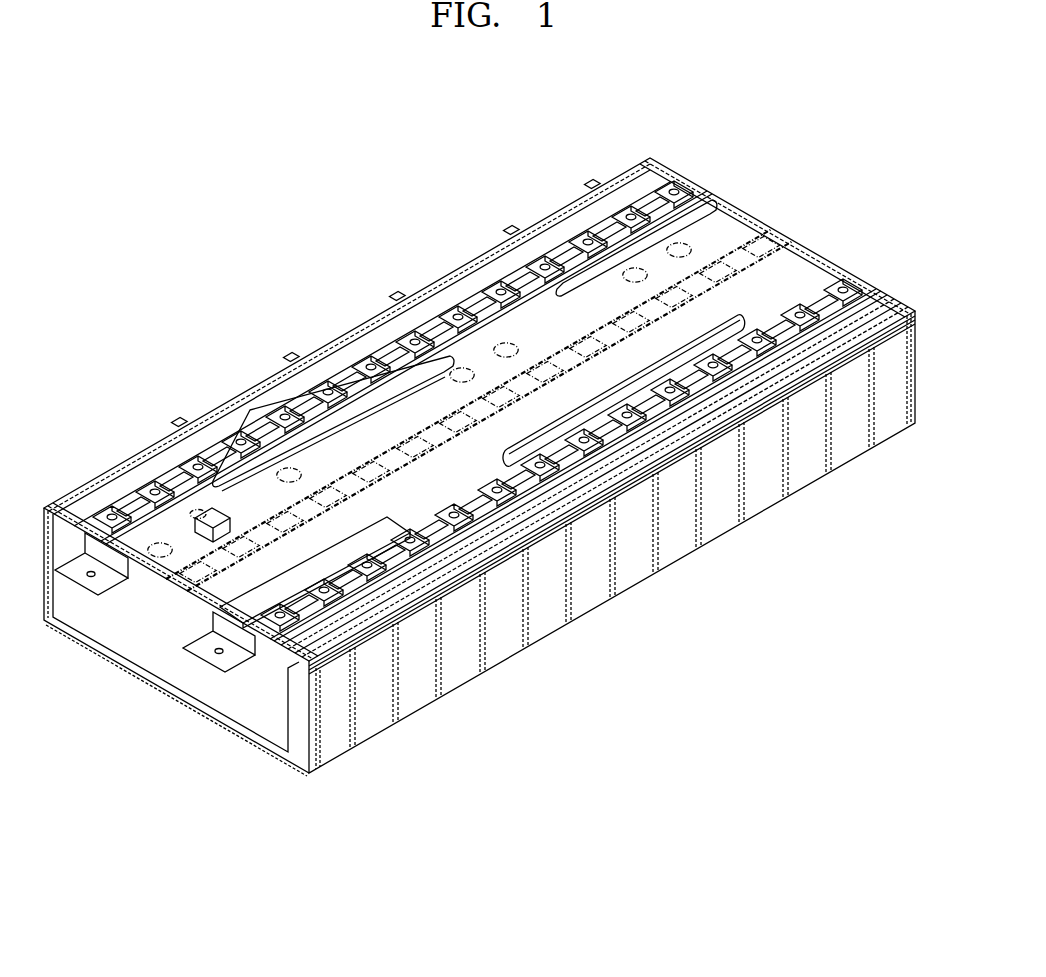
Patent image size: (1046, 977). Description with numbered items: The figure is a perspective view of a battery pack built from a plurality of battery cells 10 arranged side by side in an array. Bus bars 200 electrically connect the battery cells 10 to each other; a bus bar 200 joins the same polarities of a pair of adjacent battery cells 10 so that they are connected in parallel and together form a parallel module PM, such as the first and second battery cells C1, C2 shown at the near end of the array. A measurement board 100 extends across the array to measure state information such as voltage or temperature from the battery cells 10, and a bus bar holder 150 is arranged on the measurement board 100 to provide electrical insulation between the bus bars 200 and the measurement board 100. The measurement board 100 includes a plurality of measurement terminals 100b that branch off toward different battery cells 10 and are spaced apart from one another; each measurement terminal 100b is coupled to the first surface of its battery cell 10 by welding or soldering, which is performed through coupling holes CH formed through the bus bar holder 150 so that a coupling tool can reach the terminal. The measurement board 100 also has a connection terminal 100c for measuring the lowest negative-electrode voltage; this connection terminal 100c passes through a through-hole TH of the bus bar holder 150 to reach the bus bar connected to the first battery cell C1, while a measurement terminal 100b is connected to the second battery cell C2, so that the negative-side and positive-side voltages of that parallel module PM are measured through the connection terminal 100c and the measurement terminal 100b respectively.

The battery cell 10 is at (885, 433).
The first battery cell C1 is at (372, 728).
The second battery cell C2 is at (333, 753).
The parallel module PM is at (462, 800).
The measurement board 100 is at (462, 375).
The measurement terminal 100b is at (677, 246).
The connection terminal 100c is at (193, 512).
The bus bar holder 150 is at (810, 268).
The bus bar 200 is at (362, 343).
The through-hole TH is at (226, 527).
The coupling hole CH is at (157, 556).